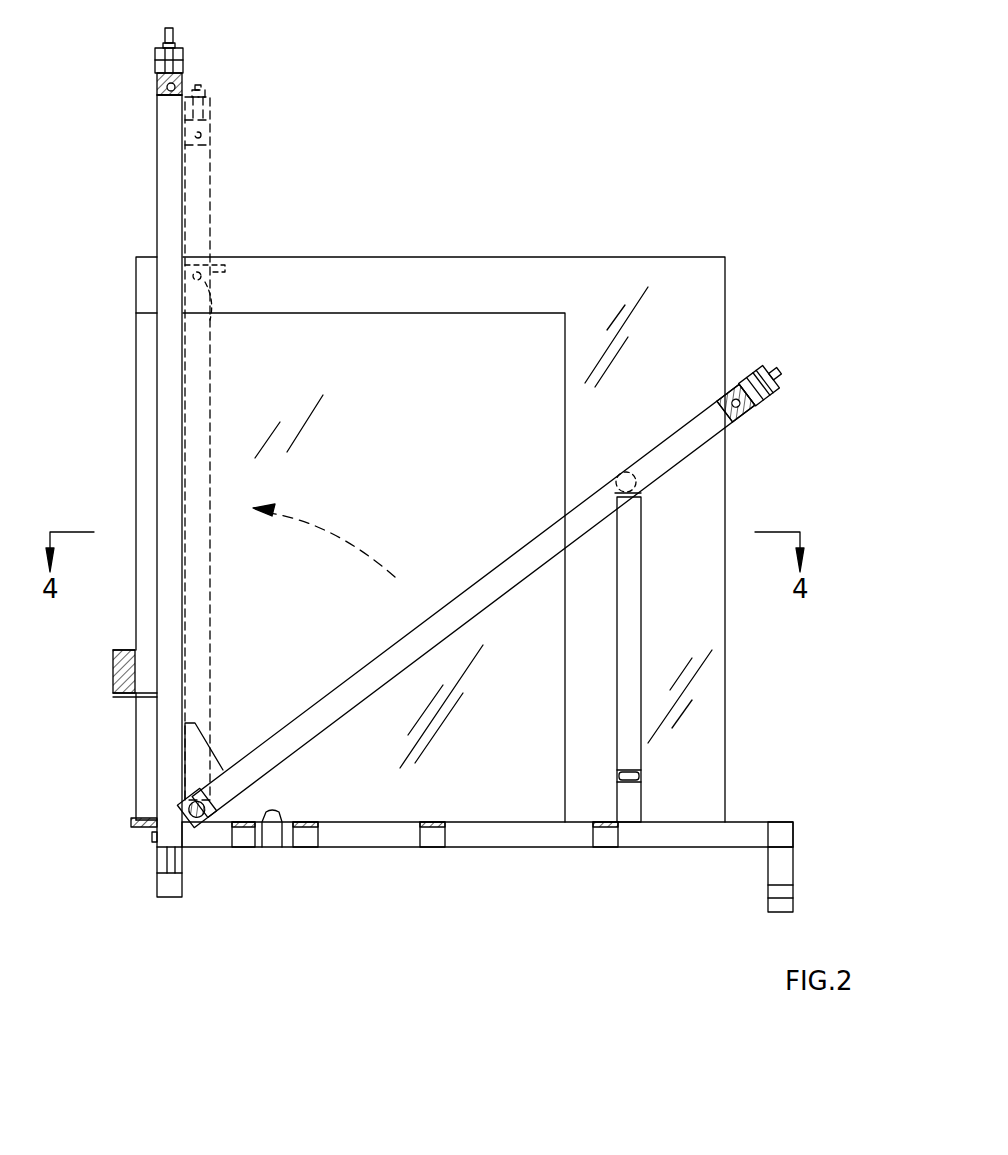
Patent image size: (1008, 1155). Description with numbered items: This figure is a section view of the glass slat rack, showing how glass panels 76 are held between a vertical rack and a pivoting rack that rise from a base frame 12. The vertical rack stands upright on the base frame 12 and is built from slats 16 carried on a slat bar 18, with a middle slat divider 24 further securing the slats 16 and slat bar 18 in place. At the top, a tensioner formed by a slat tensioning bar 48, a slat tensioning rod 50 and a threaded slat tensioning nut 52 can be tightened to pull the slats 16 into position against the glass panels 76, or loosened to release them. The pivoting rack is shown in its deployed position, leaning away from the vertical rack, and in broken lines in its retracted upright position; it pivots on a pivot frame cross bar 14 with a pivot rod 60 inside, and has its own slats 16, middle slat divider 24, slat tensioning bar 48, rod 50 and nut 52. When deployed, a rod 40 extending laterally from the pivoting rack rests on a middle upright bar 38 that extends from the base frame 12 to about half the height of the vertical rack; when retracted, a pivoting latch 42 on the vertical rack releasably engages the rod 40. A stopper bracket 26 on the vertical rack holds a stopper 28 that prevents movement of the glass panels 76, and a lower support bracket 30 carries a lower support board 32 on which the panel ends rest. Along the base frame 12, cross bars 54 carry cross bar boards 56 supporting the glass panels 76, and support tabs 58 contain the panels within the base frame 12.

The base frame 12 is at (370, 845).
The pivot frame cross bar 14 is at (185, 798).
The slat 16 is at (168, 218).
The slat bar 18 is at (170, 95).
The middle slat divider 24 is at (160, 90).
The stopper bracket 26 is at (112, 683).
The stopper 28 is at (118, 650).
The lower support bracket 30 is at (153, 840).
The lower support board 32 is at (133, 818).
The middle upright bar 38 is at (632, 567).
The rod 40 is at (205, 310).
The pivoting latch 42 is at (215, 272).
The slat tensioning bar 48 is at (183, 65).
The slat tensioning rod 50 is at (172, 58).
The slat tensioning nut 52 is at (160, 47).
The cross bar 54 is at (448, 838).
The cross bar board 56 is at (240, 822).
The support tab 58 is at (272, 850).
The pivot rod 60 is at (233, 770).
The glass panel 76 is at (380, 325).